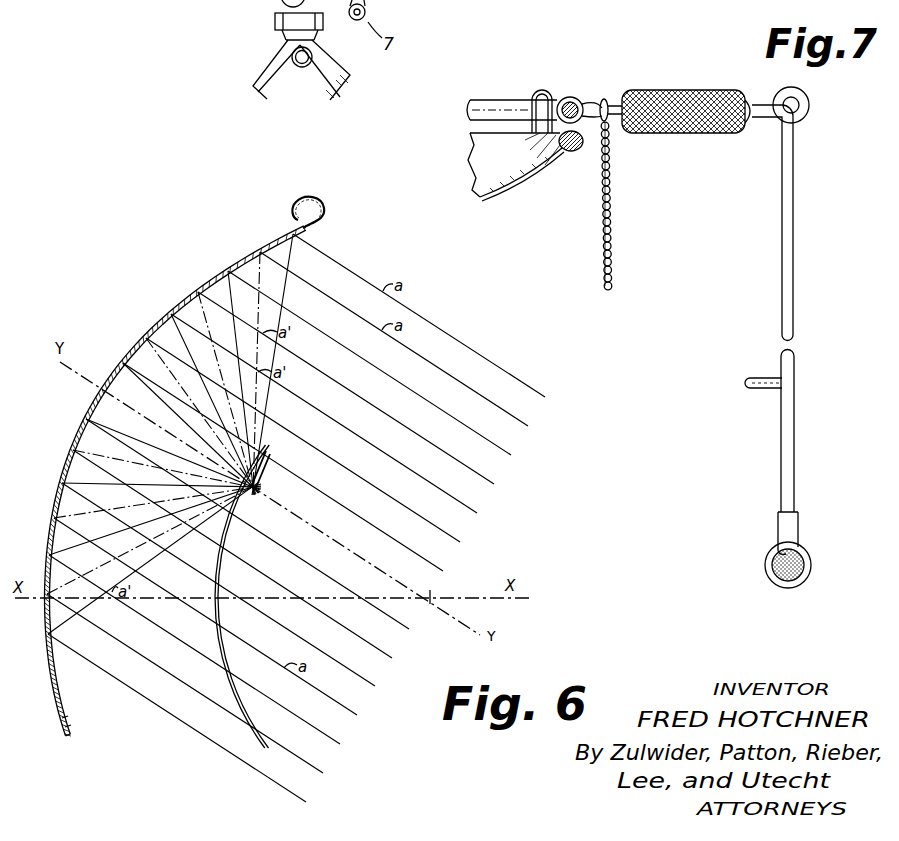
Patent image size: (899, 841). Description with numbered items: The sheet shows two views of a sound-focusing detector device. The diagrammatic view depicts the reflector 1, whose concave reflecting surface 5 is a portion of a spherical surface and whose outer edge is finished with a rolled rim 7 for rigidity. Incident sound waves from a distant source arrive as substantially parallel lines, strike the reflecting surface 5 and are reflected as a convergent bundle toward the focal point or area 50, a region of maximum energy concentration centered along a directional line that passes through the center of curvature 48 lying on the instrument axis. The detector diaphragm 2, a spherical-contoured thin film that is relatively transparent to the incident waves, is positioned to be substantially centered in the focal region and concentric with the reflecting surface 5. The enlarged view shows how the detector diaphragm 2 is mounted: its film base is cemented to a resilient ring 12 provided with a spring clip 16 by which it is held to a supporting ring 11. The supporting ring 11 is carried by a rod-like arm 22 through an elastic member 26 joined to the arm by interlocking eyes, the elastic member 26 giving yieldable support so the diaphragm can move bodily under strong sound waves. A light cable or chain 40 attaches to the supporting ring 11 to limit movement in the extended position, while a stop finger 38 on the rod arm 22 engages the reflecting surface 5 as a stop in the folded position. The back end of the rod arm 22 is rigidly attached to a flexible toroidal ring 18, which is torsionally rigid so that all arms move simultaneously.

In FIG. 6, the reflector 1 is at (205, 272).
In FIG. 6, the detector diaphragm 2 is at (216, 654).
In FIG. 7, the detector diaphragm 2 is at (522, 184).
In FIG. 6, the concave reflecting surface 5 is at (65, 703).
In FIG. 6, the rolled rim 7 is at (325, 210).
In FIG. 6, the focal point or area 50 is at (262, 447).
In FIG. 6, the center of curvature 48 is at (431, 606).
In FIG. 7, the spring clip 16 is at (541, 90).
In FIG. 7, the supporting ring 11 is at (578, 99).
In FIG. 7, the elastic member 26 is at (690, 92).
In FIG. 7, the resilient ring 12 is at (567, 152).
In FIG. 7, the light cable or chain 40 is at (612, 264).
In FIG. 7, the rod-like arm 22 is at (788, 266).
In FIG. 7, the stop finger 38 is at (763, 378).
In FIG. 7, the flexible toroidal ring 18 is at (778, 575).